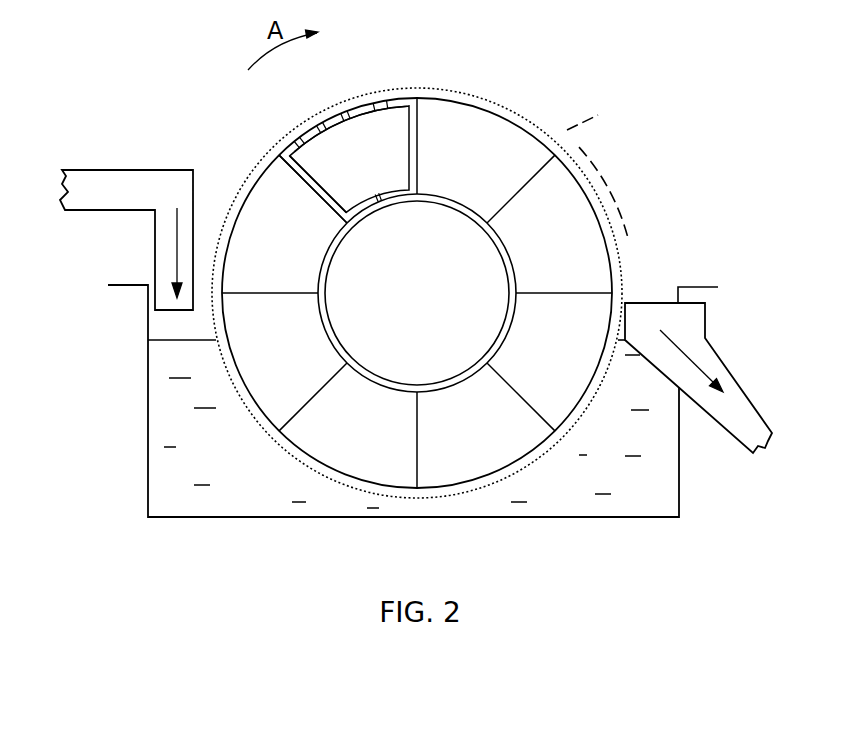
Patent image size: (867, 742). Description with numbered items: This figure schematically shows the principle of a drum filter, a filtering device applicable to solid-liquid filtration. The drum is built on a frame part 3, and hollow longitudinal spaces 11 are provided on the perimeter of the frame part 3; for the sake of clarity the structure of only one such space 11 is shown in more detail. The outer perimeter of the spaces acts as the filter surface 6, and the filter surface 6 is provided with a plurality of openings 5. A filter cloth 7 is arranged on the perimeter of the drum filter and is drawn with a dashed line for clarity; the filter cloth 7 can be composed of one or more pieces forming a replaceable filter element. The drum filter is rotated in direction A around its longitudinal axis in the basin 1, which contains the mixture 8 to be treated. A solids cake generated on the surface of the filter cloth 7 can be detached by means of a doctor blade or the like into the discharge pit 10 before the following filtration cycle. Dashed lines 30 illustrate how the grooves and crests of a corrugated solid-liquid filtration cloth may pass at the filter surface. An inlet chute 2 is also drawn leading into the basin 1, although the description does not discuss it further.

The basin 1 is at (148, 427).
The inlet chute 2 is at (120, 183).
The frame part 3 is at (408, 313).
The openings 5 is at (366, 100).
The filter surface 6 is at (283, 143).
The filter cloth 7 is at (455, 90).
The mixture 8 is at (211, 458).
The discharge pit 10 is at (737, 405).
The hollow longitudinal spaces 11 is at (379, 166).
The dashed lines 30 is at (583, 118).